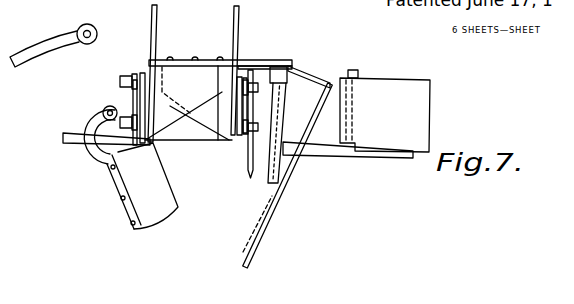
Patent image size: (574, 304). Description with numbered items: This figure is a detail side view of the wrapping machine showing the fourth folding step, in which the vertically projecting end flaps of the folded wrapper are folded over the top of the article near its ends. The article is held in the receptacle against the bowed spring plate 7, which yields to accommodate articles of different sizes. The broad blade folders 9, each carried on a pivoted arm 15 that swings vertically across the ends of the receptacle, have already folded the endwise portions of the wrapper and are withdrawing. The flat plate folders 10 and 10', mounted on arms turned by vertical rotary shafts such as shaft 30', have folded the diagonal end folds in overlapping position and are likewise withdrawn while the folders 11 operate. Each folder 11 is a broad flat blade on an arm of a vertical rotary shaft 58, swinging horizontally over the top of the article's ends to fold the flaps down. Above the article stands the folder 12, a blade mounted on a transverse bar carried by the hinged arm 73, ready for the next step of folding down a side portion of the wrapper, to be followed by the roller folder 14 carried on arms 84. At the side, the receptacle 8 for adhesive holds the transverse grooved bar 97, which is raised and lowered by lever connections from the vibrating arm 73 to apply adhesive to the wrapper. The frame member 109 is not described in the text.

The arm 84 is at (42, 40).
The folder roller 14 is at (92, 24).
The frame posts 109 is at (233, 18).
The folder 11 is at (182, 60).
The folder 10 is at (108, 108).
The arm 15 is at (97, 166).
The folder 9 is at (142, 186).
The folder 10' is at (227, 127).
The vertical rotary shaft 30' is at (238, 137).
The vertical rotary shaft 58 is at (281, 121).
The folder 12 is at (310, 77).
The arm 73 is at (282, 200).
The transverse grooved bar 97 is at (358, 72).
The receptacle 8 is at (397, 115).
The spring plate 7 is at (372, 155).